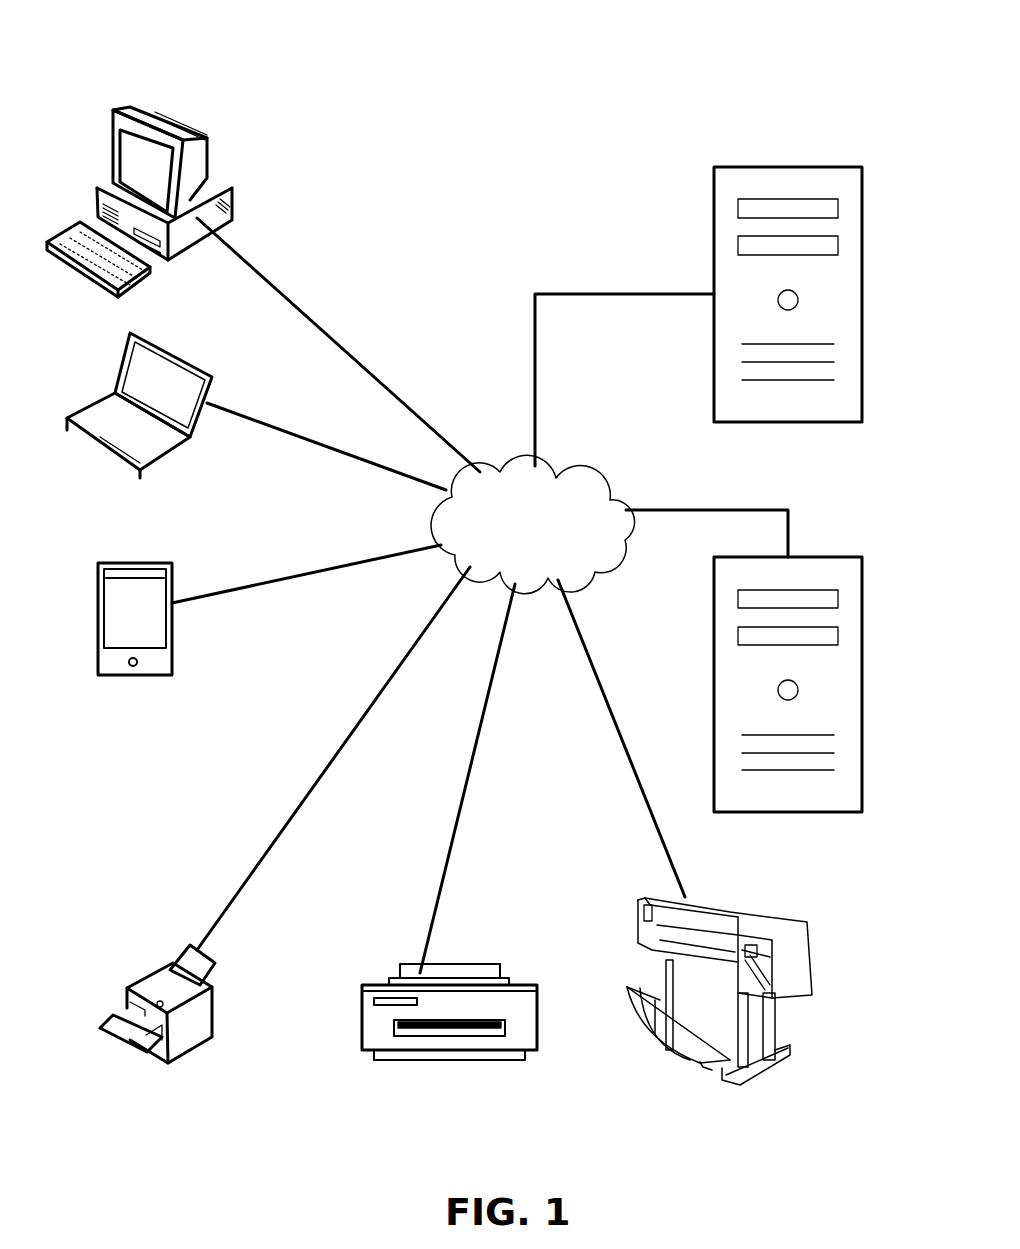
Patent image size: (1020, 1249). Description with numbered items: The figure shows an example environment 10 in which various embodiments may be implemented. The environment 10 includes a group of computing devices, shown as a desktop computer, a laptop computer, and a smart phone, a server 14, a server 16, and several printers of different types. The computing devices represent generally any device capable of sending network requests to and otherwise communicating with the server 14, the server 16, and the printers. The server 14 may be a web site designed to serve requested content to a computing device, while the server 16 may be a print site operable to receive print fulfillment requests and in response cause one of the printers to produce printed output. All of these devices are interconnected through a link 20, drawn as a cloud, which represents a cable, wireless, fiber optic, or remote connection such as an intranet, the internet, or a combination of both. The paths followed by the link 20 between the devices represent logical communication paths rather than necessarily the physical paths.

The environment 10 is at (648, 36).
The server 14 is at (788, 163).
The server 16 is at (806, 553).
The link 20 is at (502, 460).